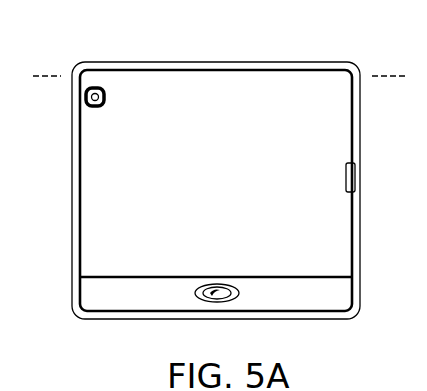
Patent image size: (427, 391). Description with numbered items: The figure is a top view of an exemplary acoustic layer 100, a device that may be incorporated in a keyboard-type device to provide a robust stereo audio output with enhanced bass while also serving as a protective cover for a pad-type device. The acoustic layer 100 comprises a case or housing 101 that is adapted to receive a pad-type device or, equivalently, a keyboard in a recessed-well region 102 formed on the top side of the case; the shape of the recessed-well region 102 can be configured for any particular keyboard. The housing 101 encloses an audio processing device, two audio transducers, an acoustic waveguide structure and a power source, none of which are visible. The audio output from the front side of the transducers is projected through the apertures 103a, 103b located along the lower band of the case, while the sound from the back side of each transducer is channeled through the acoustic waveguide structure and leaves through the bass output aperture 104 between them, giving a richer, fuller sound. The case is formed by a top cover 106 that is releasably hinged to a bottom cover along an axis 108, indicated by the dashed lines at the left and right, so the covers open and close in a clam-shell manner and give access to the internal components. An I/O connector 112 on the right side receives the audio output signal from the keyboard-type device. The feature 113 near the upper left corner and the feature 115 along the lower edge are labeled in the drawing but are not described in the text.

The acoustic layer 100 is at (72, 44).
The housing 101 is at (361, 137).
The recessed-well region 102 is at (290, 107).
The aperture 103a is at (121, 302).
The aperture 103b is at (303, 302).
The bass output aperture 104 is at (224, 297).
The top cover 106 is at (166, 90).
The axis 108 is at (53, 73).
The I/O connector 112 is at (357, 180).
The camera 113 is at (85, 103).
The bottom bezel 115 is at (152, 320).